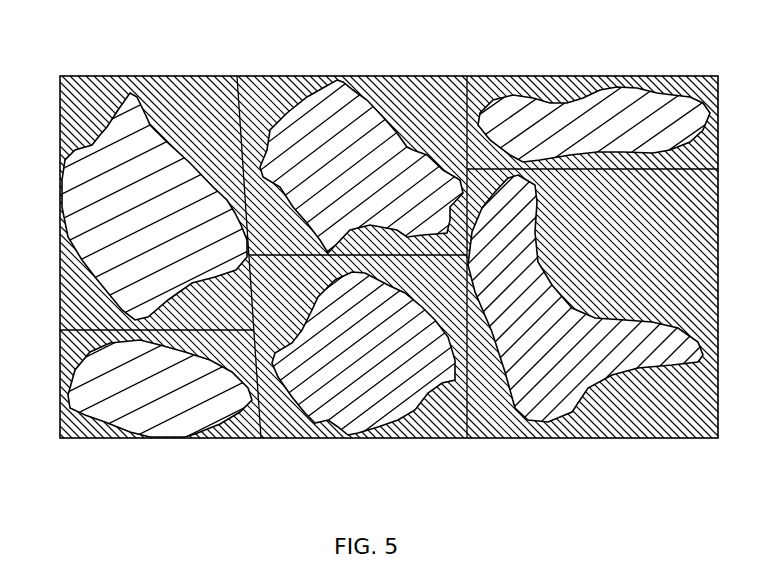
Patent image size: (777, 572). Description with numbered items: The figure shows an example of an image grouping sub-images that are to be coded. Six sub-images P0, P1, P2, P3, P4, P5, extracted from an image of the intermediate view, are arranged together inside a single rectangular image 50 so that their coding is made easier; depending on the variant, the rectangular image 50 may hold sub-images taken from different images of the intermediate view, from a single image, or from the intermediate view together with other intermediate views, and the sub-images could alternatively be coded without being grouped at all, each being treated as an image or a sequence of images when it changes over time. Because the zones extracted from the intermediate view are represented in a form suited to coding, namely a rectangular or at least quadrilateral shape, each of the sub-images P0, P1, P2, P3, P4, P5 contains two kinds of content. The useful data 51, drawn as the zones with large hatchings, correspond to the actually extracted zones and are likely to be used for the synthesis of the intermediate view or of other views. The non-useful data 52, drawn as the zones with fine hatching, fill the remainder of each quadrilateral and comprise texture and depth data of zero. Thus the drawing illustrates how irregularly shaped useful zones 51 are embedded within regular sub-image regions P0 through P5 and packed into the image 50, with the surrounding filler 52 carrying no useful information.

The rectangular image 50 is at (686, 76).
The useful data 51 is at (123, 167).
The non-useful data 52 is at (187, 122).
The sub-image P0 is at (62, 300).
The sub-image P1 is at (292, 77).
The sub-image P2 is at (498, 76).
The sub-image P3 is at (66, 440).
The sub-image P4 is at (301, 440).
The sub-image P5 is at (534, 440).